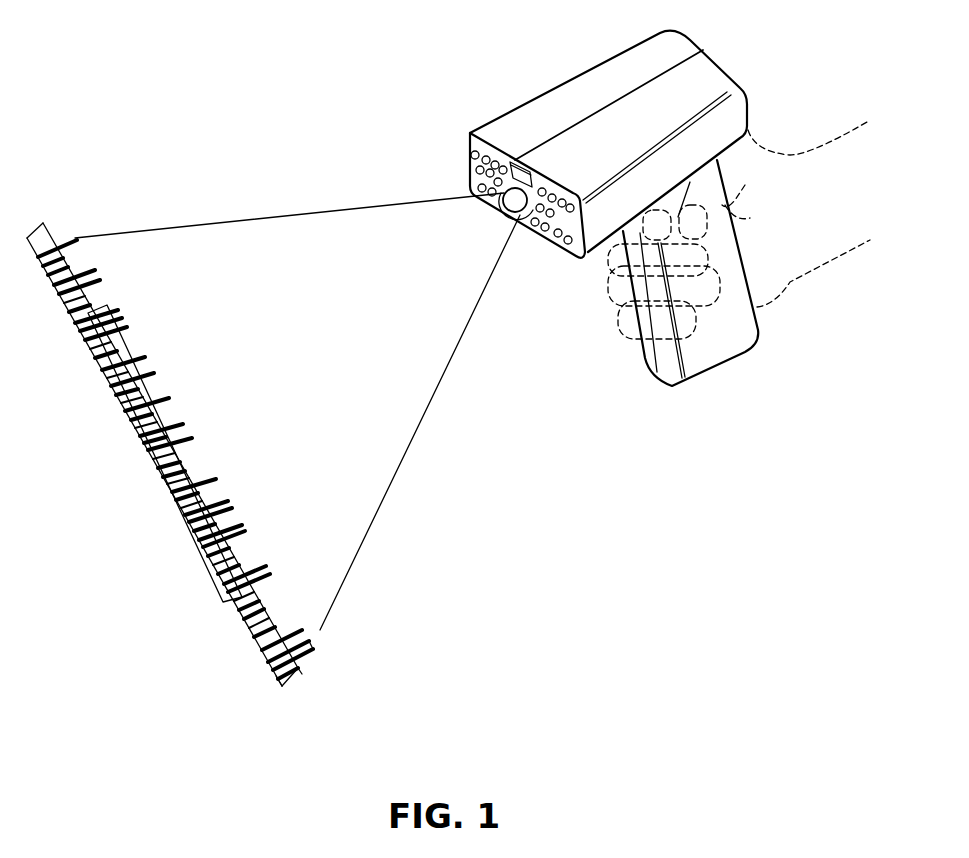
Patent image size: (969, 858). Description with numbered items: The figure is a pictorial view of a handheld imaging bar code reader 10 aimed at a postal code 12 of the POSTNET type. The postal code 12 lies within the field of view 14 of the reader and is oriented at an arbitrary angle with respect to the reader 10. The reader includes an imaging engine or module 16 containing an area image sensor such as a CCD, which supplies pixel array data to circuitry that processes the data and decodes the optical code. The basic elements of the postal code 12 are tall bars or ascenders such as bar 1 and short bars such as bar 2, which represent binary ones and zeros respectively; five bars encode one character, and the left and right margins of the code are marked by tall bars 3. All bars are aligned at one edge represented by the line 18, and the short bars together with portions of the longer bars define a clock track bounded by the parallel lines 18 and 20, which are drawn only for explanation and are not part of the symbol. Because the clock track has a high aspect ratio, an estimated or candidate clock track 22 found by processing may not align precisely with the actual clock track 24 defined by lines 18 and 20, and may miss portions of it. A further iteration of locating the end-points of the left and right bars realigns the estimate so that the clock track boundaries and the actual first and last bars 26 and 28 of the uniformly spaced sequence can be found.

The handheld imaging bar code reader 10 is at (533, 64).
The postal code 12 is at (235, 622).
The field of view 14 is at (368, 320).
The imaging engine or module 16 is at (564, 223).
The line 18 is at (282, 687).
The line 20 is at (302, 672).
The estimated or candidate clock track 22 is at (138, 340).
The actual clock track 24 is at (299, 683).
The first bar 26 is at (73, 236).
The last bar 28 is at (312, 651).
The tall bar 1 is at (213, 470).
The short bar 2 is at (250, 548).
The tall bars 3 is at (76, 238).